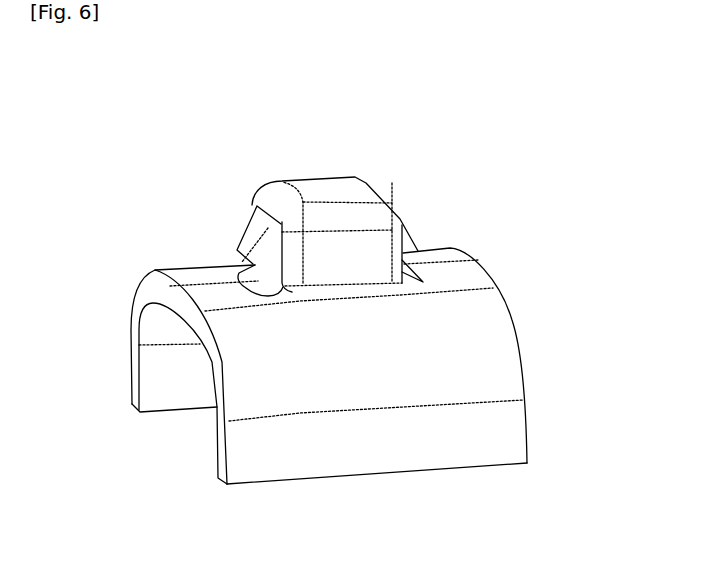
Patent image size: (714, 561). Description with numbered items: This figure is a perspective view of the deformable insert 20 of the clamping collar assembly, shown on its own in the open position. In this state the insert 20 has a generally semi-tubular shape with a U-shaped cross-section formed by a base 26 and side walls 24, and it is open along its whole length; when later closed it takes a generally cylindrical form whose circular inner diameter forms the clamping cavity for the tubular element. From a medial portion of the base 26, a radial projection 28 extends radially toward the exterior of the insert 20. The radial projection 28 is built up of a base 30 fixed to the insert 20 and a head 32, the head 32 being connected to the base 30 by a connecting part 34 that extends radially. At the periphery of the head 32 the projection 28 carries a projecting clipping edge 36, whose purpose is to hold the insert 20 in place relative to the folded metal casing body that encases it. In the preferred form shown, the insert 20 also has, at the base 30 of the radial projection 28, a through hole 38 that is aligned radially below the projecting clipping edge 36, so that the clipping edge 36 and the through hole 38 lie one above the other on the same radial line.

The deformable insert 20 is at (483, 367).
The side walls 24 is at (463, 318).
The base 26 is at (460, 252).
The radial projection 28 is at (401, 183).
The base of the projection 30 is at (323, 292).
The head 32 is at (300, 205).
The connecting part 34 is at (377, 257).
The projecting clipping edge 36 is at (257, 237).
The through hole 38 is at (262, 283).